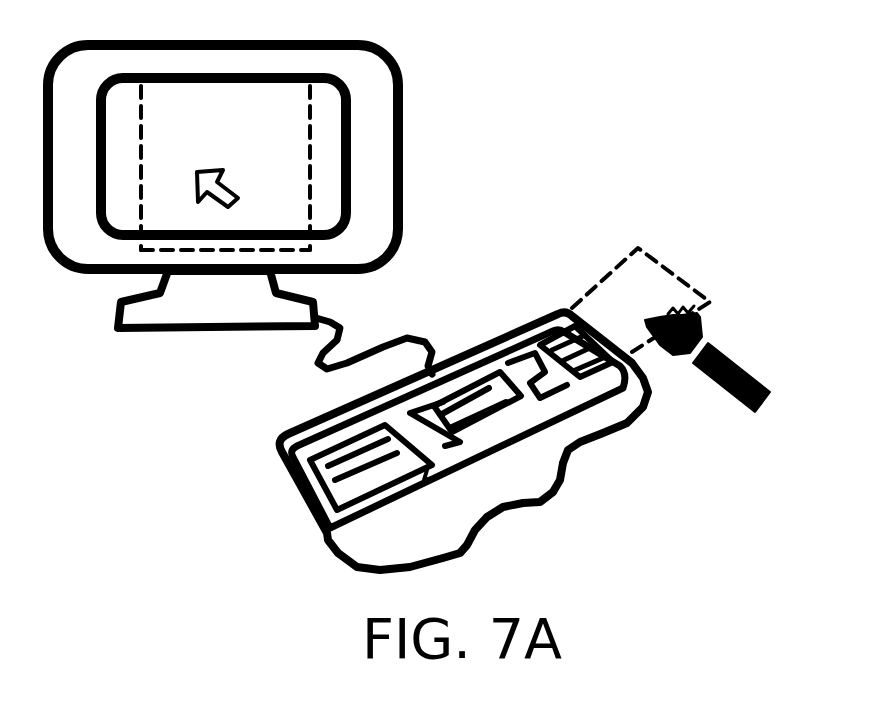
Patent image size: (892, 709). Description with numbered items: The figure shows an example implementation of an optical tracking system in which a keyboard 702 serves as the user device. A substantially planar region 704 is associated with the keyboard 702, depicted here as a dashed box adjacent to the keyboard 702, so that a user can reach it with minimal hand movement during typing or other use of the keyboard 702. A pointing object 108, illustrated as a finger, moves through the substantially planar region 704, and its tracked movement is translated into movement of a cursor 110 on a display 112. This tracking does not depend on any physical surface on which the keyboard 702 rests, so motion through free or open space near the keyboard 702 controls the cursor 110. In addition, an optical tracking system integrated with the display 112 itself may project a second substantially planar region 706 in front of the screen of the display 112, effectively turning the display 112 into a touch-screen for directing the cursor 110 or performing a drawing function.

The display 112 is at (398, 62).
The cursor 110 is at (222, 171).
The substantially planar region 706 is at (143, 248).
The keyboard 702 is at (307, 516).
The substantially planar region 704 is at (643, 254).
The pointing object 108 is at (737, 355).